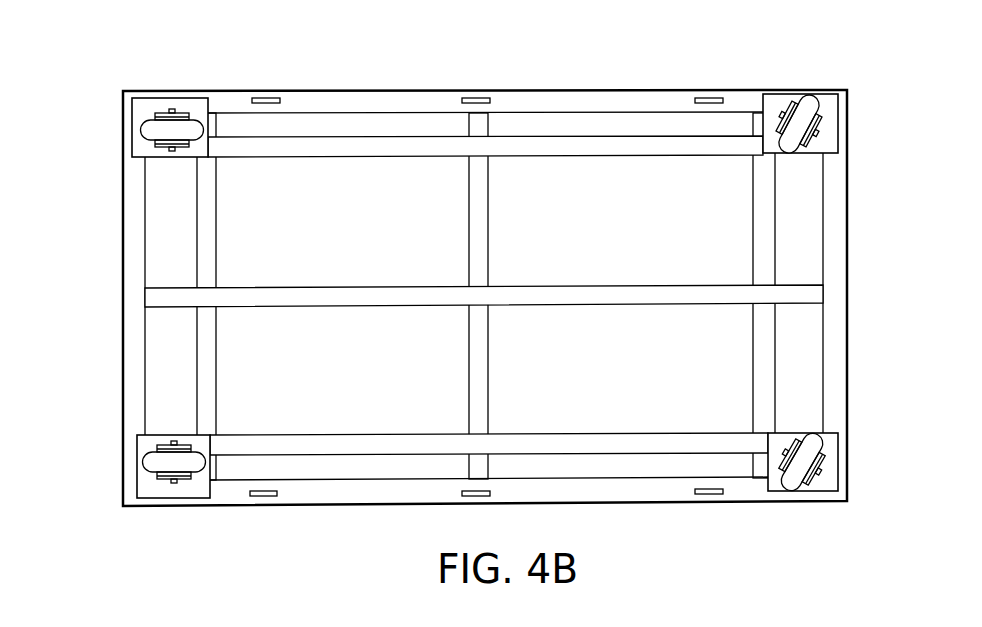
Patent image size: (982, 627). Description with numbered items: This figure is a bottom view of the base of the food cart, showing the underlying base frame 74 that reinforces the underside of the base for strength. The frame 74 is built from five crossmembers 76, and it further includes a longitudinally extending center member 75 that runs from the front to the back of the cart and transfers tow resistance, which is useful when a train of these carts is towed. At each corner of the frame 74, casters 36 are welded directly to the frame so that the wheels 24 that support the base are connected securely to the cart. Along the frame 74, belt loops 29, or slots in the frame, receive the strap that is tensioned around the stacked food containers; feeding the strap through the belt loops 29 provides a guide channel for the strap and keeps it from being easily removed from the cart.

The underlying base frame 74 is at (116, 303).
The longitudinally extending center member 75 is at (368, 296).
The crossmembers 76 is at (203, 210).
The casters 36 is at (140, 112).
The wheels 24 is at (143, 136).
The belt loops 29 is at (281, 97).